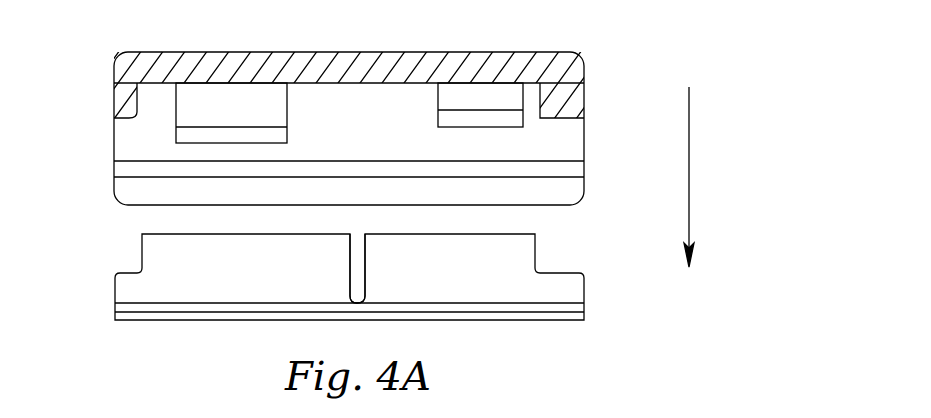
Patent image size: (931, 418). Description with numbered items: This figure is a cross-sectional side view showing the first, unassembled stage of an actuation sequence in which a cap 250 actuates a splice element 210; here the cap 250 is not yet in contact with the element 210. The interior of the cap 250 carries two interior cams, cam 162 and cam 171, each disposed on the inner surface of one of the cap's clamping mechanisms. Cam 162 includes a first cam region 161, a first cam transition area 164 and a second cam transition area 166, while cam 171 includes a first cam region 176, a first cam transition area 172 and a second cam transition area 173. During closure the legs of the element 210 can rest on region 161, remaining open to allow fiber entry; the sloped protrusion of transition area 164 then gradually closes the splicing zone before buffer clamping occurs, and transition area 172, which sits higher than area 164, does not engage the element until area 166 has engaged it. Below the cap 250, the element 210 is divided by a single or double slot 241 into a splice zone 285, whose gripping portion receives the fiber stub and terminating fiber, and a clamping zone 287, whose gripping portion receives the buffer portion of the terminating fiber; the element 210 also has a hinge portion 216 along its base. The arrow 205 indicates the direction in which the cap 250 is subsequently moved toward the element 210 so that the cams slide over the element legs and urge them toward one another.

The cap 250 is at (537, 42).
The second cam transition area 166 is at (188, 100).
The first cam transition area 164 is at (197, 132).
The interior cam 162 is at (176, 132).
The first cam region 161 is at (230, 148).
The second cam transition area 173 is at (513, 90).
The interior cam 171 is at (524, 105).
The first cam transition area 172 is at (513, 118).
The first cam region 176 is at (478, 135).
The arrow 205 is at (690, 172).
The splice element 210 is at (101, 275).
The hinge portion 216 is at (114, 318).
The slot 241 is at (365, 287).
The splice zone 285 is at (290, 278).
The clamping zone 287 is at (459, 278).